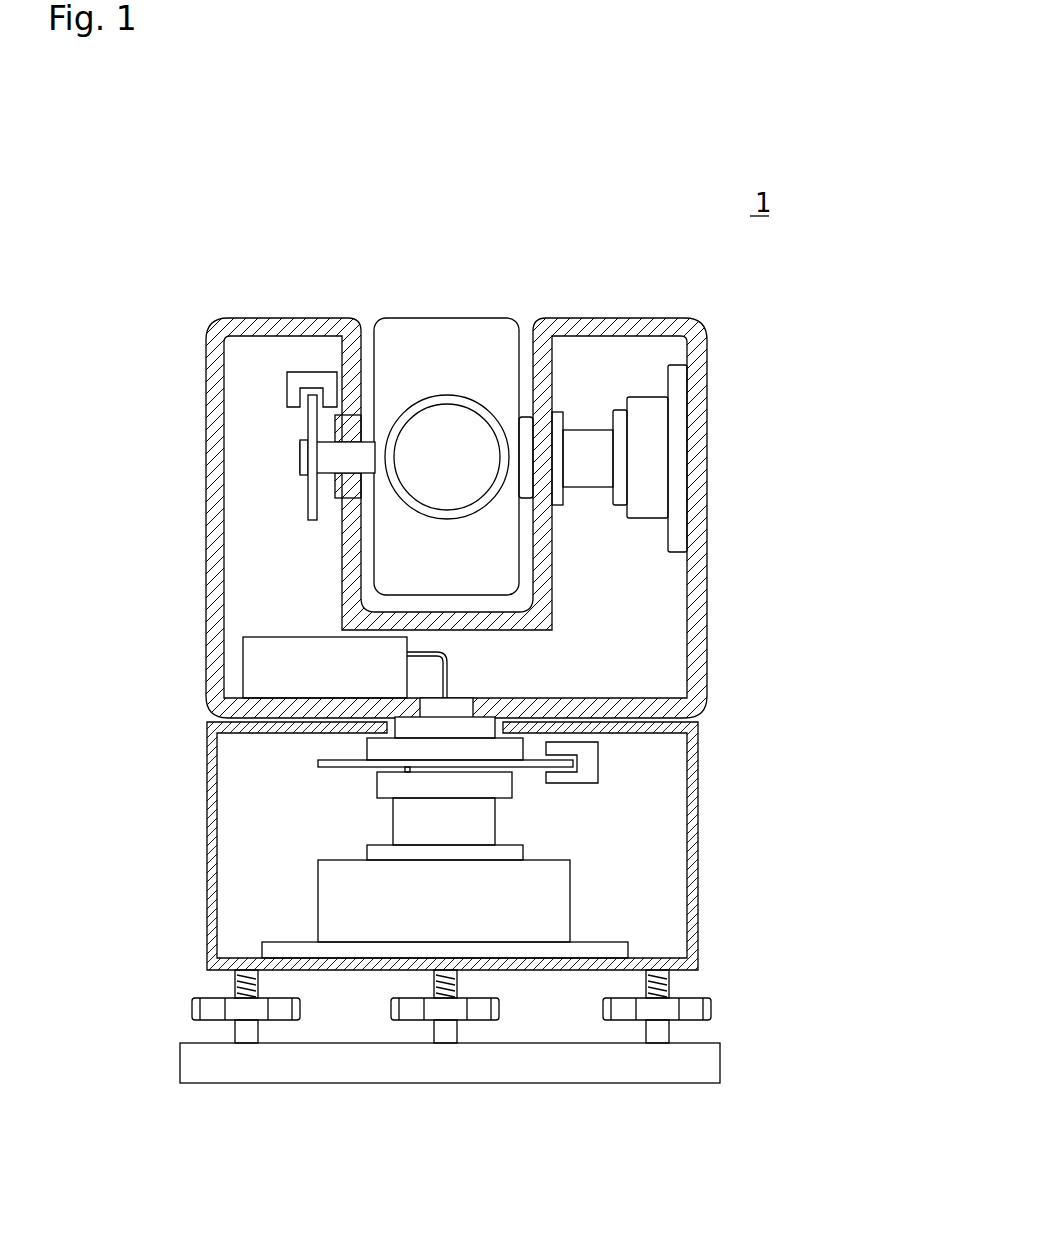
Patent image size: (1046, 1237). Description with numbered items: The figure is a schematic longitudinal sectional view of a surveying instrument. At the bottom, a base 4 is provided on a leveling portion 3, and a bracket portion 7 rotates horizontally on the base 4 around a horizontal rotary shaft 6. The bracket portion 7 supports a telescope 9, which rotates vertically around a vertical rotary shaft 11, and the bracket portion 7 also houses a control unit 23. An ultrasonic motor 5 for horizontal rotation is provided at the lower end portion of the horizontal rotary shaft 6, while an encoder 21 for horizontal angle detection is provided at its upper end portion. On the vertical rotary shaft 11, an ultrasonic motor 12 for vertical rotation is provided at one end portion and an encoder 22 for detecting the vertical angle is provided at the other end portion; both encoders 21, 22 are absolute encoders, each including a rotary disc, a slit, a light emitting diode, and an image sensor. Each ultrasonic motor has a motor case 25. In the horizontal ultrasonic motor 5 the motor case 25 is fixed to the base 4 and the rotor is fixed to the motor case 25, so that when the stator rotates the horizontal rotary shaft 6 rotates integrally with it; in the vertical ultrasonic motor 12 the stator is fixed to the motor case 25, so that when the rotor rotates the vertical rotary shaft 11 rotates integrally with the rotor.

The leveling portion 3 is at (715, 1003).
The base 4 is at (703, 910).
The ultrasonic motor for horizontal rotation 5 is at (573, 870).
The horizontal rotary shaft 6 is at (497, 722).
The bracket portion 7 is at (707, 584).
The telescope 9 is at (403, 318).
The vertical rotary shaft 11 is at (300, 449).
The ultrasonic motor for vertical rotation 12 is at (647, 393).
The encoder for horizontal angle detection 21 is at (603, 760).
The encoder for vertical angle detection 22 is at (283, 367).
The control unit 23 is at (262, 637).
The motor case 25 is at (652, 443).